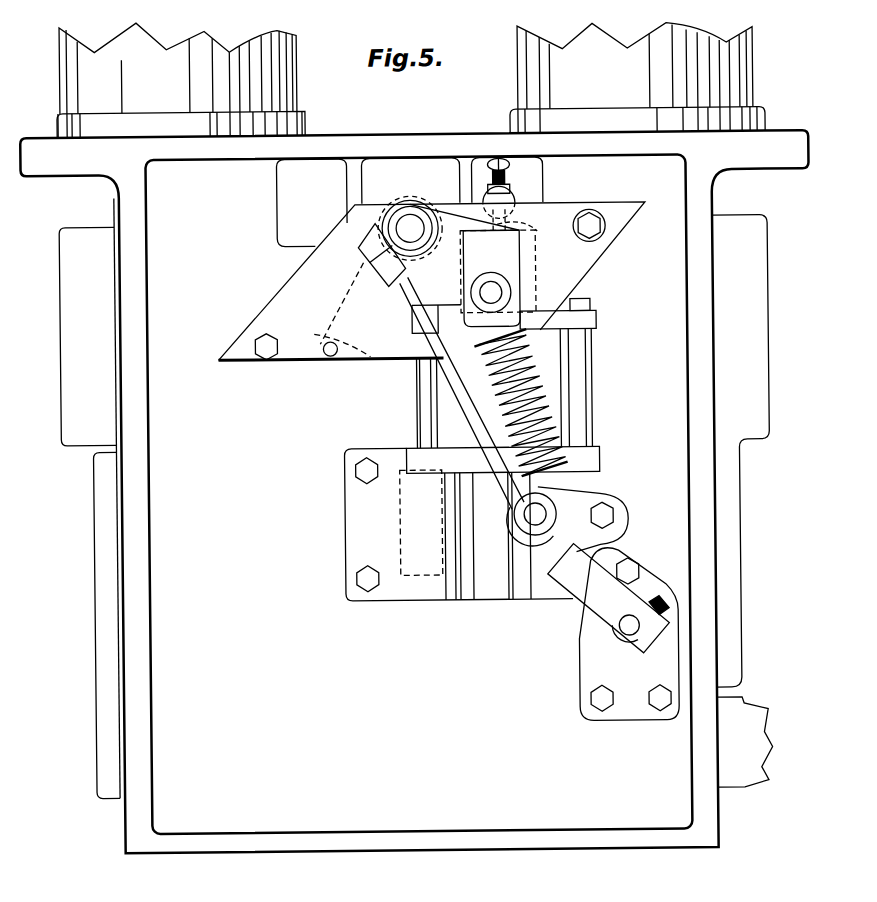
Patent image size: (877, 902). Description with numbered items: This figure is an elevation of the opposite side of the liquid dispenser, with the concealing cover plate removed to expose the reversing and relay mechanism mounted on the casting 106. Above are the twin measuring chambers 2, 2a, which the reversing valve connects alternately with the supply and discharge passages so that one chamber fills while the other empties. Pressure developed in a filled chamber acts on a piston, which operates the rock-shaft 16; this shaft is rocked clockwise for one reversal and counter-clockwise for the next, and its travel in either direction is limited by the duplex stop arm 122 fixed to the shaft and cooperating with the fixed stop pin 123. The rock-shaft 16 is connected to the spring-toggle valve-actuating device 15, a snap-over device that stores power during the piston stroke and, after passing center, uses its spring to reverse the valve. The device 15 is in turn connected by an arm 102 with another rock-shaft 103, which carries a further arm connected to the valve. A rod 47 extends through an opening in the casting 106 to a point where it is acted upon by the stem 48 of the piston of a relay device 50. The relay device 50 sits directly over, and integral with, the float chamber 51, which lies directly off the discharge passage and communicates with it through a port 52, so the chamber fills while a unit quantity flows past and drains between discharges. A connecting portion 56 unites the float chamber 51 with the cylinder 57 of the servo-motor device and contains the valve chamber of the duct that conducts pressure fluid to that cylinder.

The measuring chamber 2 is at (752, 82).
The measuring chamber 2a is at (300, 88).
The casting 106 is at (427, 133).
The rock-shaft 16 is at (413, 228).
The rod 47 is at (516, 196).
The stem 48 is at (488, 265).
The cylinder 57 is at (540, 268).
The spring-toggle valve-actuating device 15 is at (518, 312).
The relay device 50 is at (547, 360).
The connecting portion 56 is at (547, 397).
The duplex stop arm 122 is at (360, 357).
The stop pin 123 is at (325, 355).
The float chamber 51 is at (492, 593).
The port 52 is at (413, 578).
The arm 102 is at (575, 602).
The rock-shaft 103 is at (627, 625).